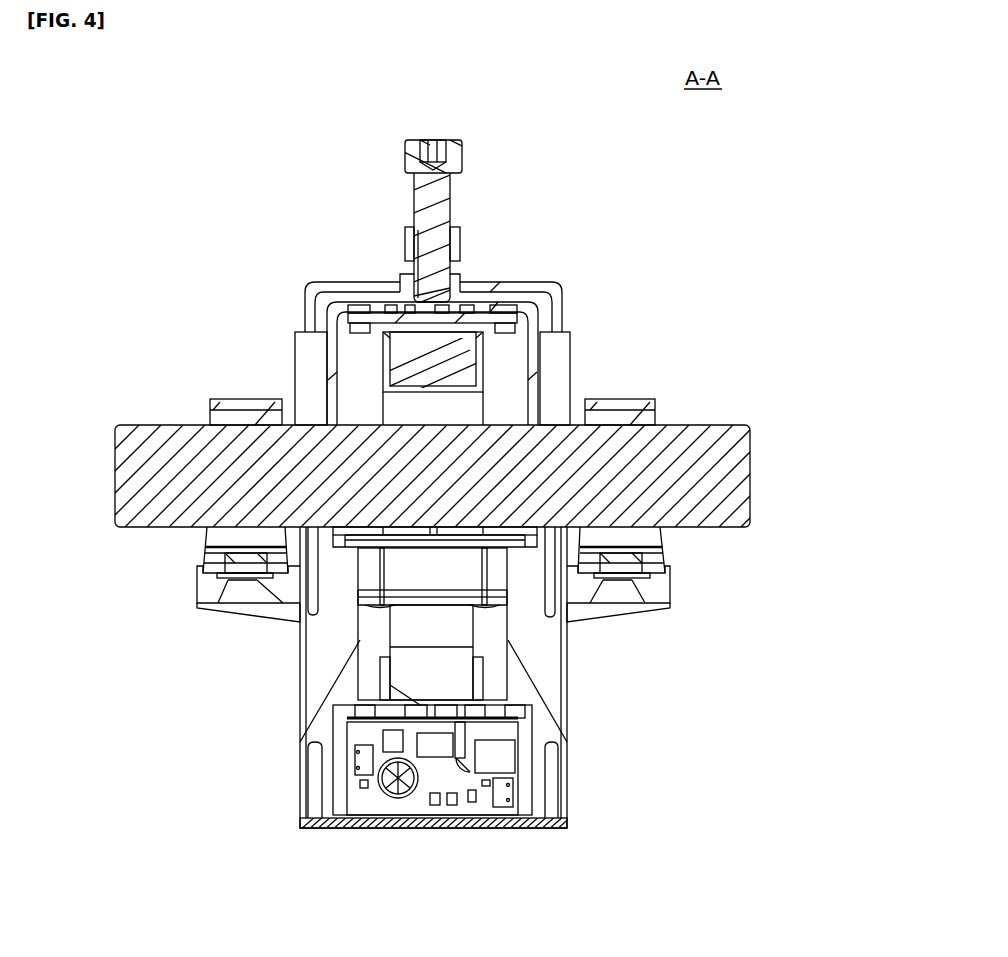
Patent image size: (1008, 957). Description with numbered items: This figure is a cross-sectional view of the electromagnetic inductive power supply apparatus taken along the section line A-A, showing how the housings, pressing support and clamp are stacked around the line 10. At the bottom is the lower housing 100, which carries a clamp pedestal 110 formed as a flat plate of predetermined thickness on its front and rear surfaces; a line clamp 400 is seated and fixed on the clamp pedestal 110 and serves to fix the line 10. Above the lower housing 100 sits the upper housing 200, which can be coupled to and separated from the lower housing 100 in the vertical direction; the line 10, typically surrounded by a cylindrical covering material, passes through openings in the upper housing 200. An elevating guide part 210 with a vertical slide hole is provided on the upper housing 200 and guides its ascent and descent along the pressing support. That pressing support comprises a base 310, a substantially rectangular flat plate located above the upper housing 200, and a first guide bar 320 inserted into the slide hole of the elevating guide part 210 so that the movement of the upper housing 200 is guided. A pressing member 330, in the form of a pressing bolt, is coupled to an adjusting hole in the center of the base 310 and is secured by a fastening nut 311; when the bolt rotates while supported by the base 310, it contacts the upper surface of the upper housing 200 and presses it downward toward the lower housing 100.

The line 10 is at (715, 462).
The lower housing 100 is at (307, 658).
The clamp pedestal 110 is at (206, 590).
The upper housing 200 is at (533, 320).
The elevating guide part 210 is at (553, 371).
The base 310 is at (523, 288).
The fastening nut 311 is at (457, 241).
The first guide bar 320 is at (556, 325).
The pressing member 330 is at (422, 201).
The line clamp 400 is at (355, 559).